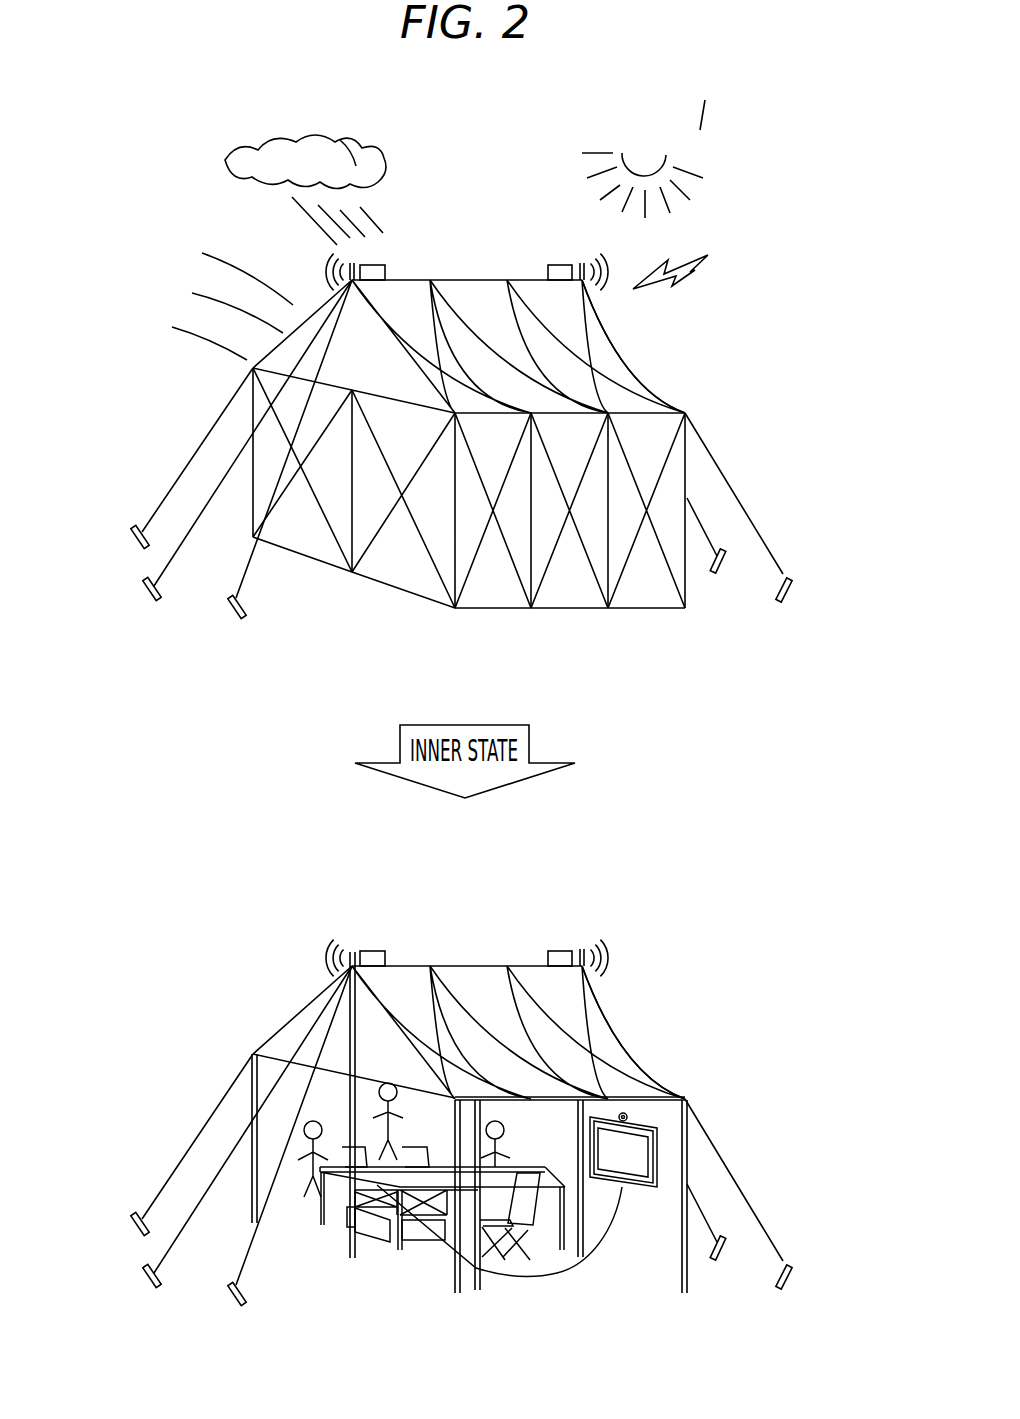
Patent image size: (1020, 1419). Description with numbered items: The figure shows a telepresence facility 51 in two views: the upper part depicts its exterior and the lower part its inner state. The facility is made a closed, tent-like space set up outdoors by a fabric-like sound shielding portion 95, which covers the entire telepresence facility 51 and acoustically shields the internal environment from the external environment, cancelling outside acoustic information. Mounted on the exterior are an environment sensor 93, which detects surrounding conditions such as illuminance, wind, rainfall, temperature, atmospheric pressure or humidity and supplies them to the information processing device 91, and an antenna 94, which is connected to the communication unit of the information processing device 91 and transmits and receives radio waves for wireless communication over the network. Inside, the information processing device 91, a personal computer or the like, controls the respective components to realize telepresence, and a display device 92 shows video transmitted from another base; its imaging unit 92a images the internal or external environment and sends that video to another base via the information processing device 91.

The telepresence facility 51 is at (468, 230).
The environment sensor 93 is at (385, 267).
The antenna 94 is at (561, 264).
The fabric-like sound shielding portion 95 is at (606, 349).
The information processing device 91 is at (421, 1242).
The display device 92 is at (641, 1188).
The imaging unit 92a is at (628, 1123).